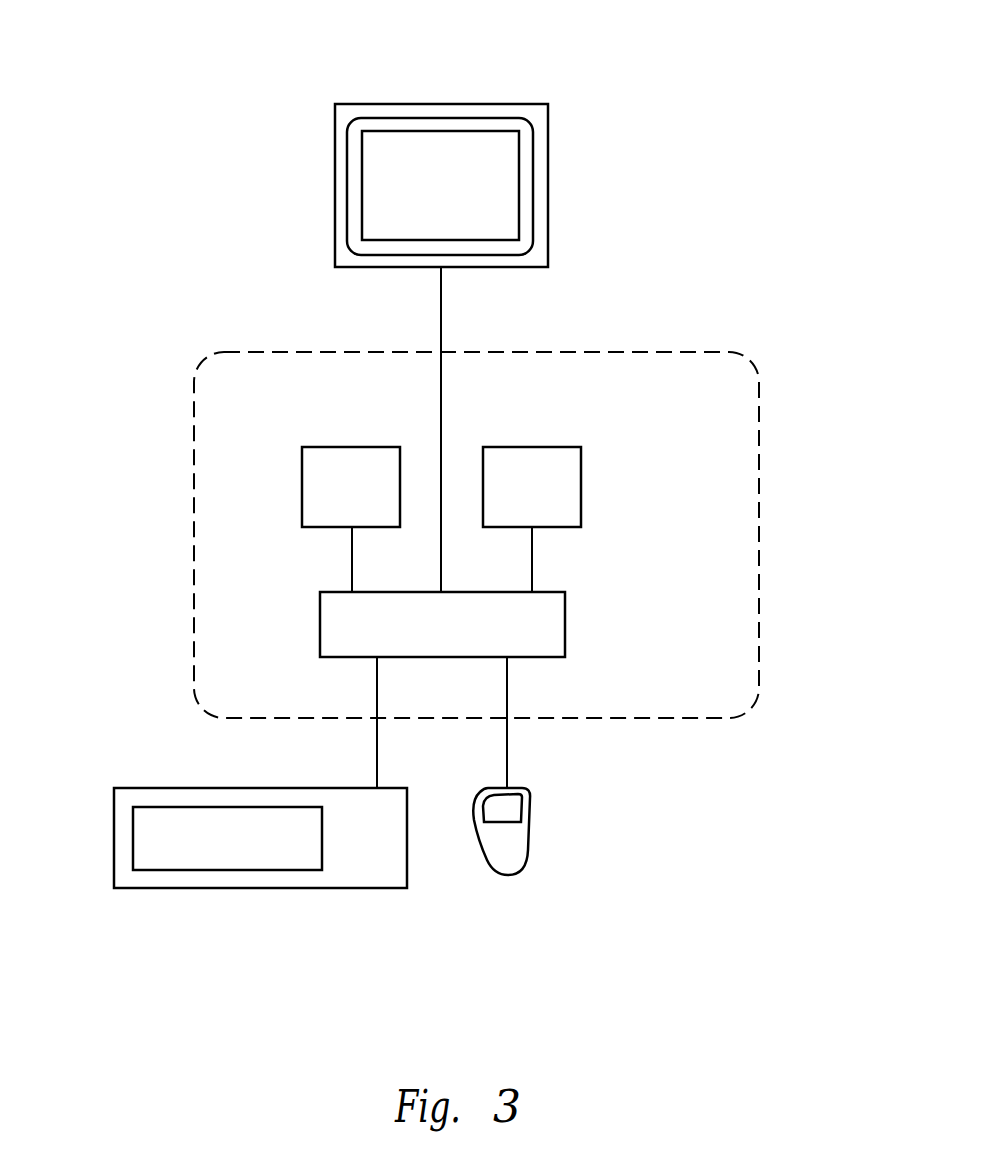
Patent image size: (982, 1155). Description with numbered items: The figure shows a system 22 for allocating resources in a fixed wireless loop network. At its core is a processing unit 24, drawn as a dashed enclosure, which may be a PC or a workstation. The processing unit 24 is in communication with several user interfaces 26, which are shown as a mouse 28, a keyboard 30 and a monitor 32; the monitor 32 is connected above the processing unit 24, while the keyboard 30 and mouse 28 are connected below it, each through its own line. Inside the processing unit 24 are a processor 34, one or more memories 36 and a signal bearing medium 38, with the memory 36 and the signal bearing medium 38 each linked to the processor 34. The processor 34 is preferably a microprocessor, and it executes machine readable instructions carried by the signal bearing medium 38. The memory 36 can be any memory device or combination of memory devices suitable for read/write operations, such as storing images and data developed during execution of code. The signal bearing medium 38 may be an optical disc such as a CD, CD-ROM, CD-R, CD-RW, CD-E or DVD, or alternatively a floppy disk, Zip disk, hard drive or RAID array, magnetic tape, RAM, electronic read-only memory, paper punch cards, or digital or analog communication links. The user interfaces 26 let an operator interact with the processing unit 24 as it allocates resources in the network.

The system 22 is at (166, 186).
The processing unit 24 is at (752, 274).
The user interfaces 26 is at (548, 170).
The mouse 28 is at (527, 842).
The keyboard 30 is at (114, 822).
The monitor 32 is at (462, 103).
The processor 34 is at (565, 620).
The memory 36 is at (328, 447).
The signal bearing medium 38 is at (567, 447).